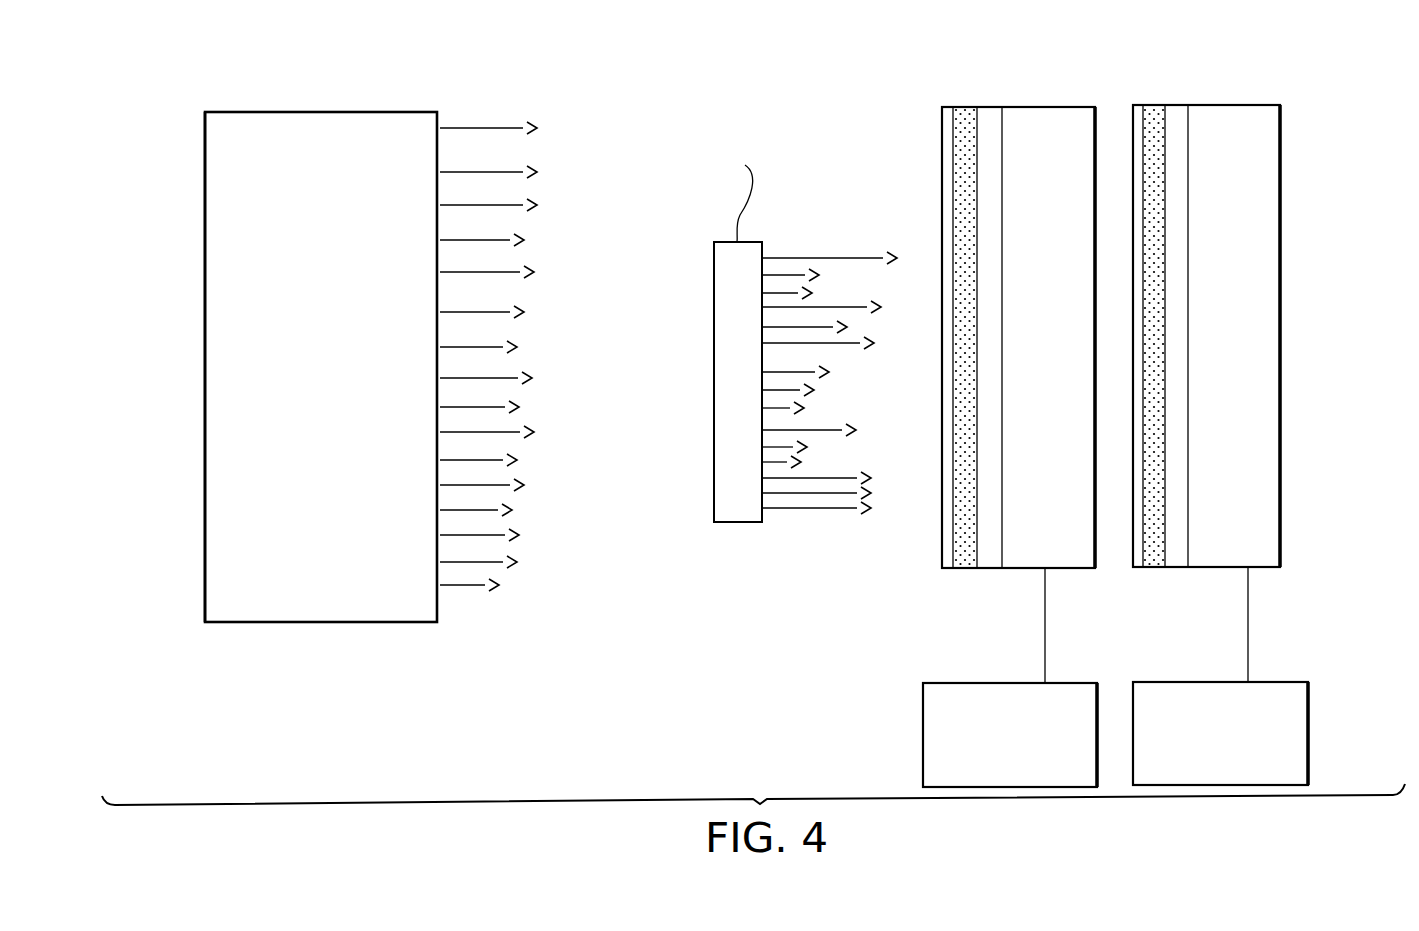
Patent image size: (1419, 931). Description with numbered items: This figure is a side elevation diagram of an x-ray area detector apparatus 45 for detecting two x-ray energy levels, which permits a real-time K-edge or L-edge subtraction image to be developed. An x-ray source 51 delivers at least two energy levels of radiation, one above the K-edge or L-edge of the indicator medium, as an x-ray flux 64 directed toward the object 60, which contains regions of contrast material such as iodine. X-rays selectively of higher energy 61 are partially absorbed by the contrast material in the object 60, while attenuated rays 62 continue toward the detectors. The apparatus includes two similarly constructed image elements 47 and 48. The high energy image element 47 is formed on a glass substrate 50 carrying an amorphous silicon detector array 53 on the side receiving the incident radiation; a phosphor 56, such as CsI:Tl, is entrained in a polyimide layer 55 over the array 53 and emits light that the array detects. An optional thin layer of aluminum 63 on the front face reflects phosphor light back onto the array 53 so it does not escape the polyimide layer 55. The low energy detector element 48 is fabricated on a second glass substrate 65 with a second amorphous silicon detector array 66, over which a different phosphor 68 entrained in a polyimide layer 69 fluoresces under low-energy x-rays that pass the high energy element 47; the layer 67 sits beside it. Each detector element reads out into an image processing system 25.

The x-ray area detector apparatus 45 is at (316, 82).
The x-ray source 51 is at (205, 258).
The x-ray flux 64 is at (477, 107).
The object 60 is at (733, 522).
The x-rays of higher energy 61 is at (828, 258).
The attenuated X-rays 62 is at (792, 372).
The image element 47 is at (1033, 86).
The thin layer of aluminum 63 is at (940, 560).
The phosphor 56 is at (963, 153).
The polyimide layer 55 is at (965, 568).
The amorphous silicon detector array 53 is at (990, 568).
The glass substrate 50 is at (1062, 562).
The low energy detector element 48 is at (1258, 81).
The polyimide layer 69 is at (1138, 567).
The phosphor 68 is at (1155, 180).
The scintillator layer 67 is at (1160, 567).
The second amorphous silicon detector array 66 is at (1183, 567).
The second glass substrate 65 is at (1257, 552).
The image processing system 25 is at (923, 740).